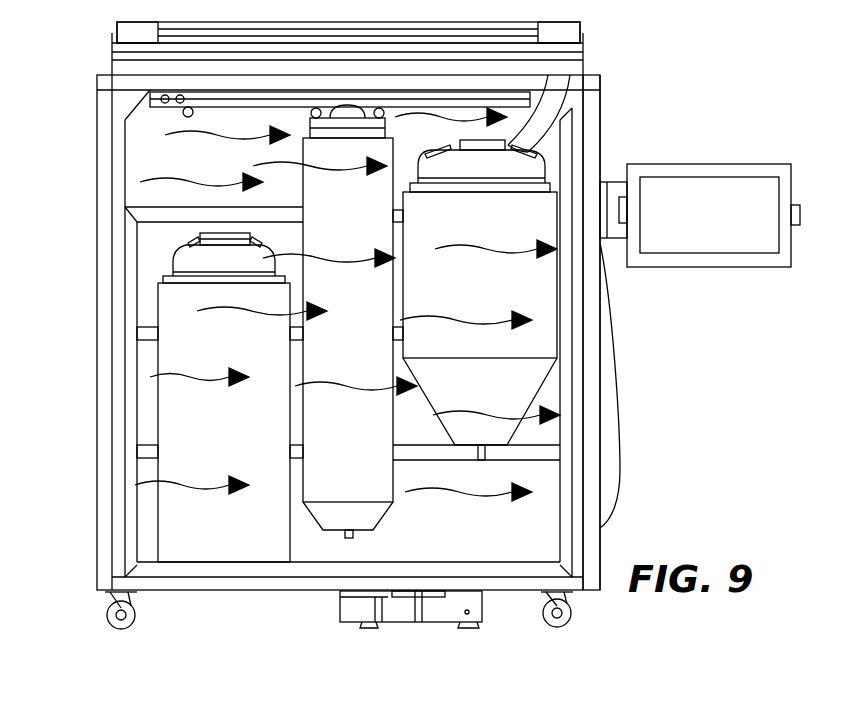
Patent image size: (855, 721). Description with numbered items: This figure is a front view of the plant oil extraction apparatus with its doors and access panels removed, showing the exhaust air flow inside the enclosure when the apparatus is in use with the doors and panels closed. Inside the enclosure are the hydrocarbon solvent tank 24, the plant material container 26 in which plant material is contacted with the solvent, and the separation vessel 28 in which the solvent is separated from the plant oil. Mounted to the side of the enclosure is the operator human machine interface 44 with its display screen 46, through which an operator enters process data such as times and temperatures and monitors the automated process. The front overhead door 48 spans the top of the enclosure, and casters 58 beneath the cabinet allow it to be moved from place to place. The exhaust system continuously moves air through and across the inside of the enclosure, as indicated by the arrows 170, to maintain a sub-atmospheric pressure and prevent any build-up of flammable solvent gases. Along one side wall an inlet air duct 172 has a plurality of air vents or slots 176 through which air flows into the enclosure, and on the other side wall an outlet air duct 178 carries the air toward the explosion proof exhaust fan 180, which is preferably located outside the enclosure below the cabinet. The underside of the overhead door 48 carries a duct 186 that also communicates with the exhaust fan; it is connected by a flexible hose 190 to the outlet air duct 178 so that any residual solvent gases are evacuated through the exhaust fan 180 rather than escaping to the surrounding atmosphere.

The hydrocarbon solvent tank 24 is at (148, 528).
The plant material container 26 is at (312, 532).
The separation vessel 28 is at (543, 397).
The operator human machine interface 44 is at (735, 275).
The display screen 46 is at (757, 195).
The front overhead door 48 is at (100, 52).
The casters 58 is at (113, 628).
The arrows 170 is at (143, 182).
The inlet air duct 172 is at (112, 402).
The air vents or slots 176 is at (128, 370).
The outlet air duct 178 is at (583, 468).
The explosion proof exhaust fan 180 is at (408, 634).
The duct 186 is at (136, 86).
The flexible hose 190 is at (567, 103).